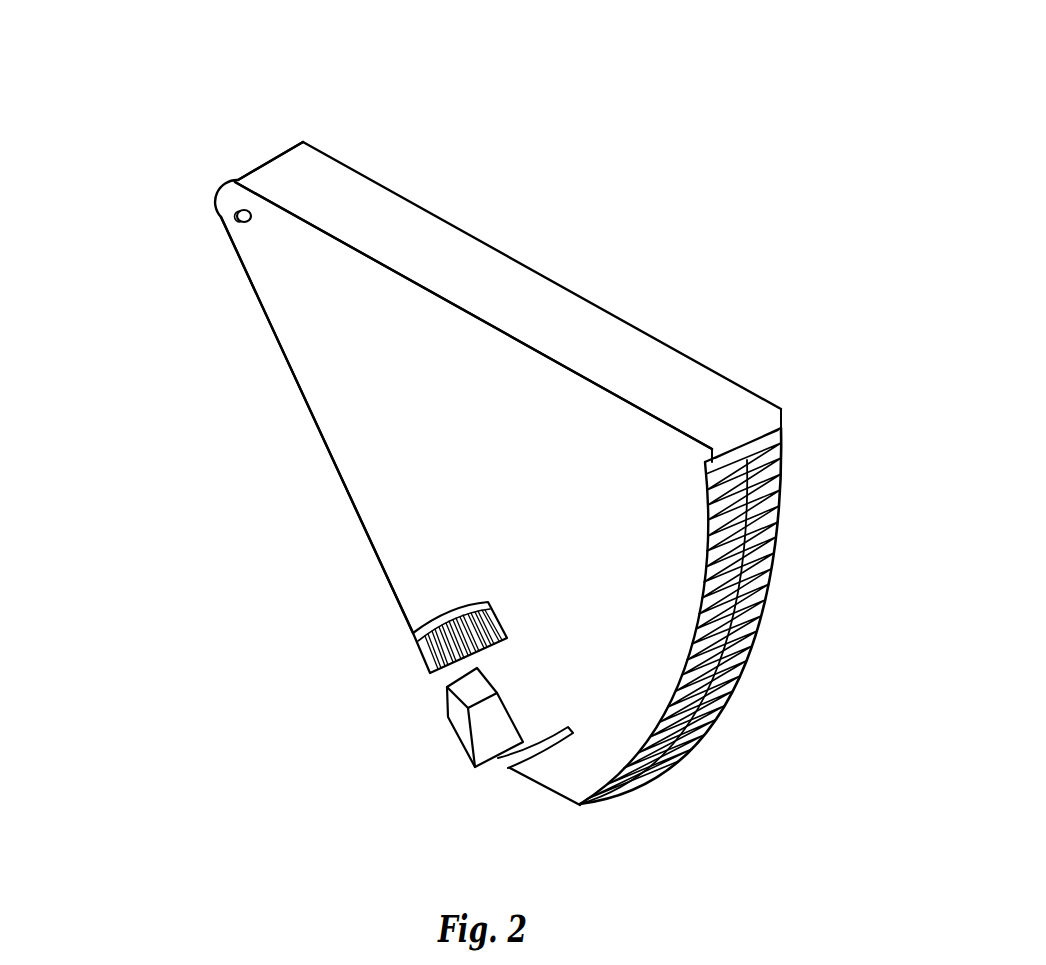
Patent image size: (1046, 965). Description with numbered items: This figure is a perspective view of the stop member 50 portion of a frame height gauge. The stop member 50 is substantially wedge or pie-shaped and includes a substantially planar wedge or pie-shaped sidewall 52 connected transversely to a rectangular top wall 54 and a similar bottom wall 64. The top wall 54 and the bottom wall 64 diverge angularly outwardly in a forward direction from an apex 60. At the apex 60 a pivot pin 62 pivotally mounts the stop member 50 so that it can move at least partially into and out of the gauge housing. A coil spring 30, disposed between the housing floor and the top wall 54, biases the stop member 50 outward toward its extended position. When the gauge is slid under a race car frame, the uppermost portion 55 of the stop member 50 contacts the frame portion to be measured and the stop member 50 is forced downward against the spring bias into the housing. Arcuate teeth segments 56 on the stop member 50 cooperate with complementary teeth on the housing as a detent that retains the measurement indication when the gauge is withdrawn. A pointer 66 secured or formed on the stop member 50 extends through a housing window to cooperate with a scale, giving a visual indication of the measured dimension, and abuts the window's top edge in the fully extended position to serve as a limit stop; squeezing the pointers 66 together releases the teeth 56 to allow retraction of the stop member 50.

The stop member 50 is at (631, 108).
The coil spring 30 is at (722, 660).
The sidewall 52 is at (408, 433).
The top wall 54 is at (534, 315).
The uppermost portion 55 is at (785, 418).
The arcuate teeth segments 56 is at (432, 627).
The apex 60 is at (258, 163).
The pivot pin 62 is at (225, 225).
The bottom wall 64 is at (273, 337).
The pointer 66 is at (468, 730).